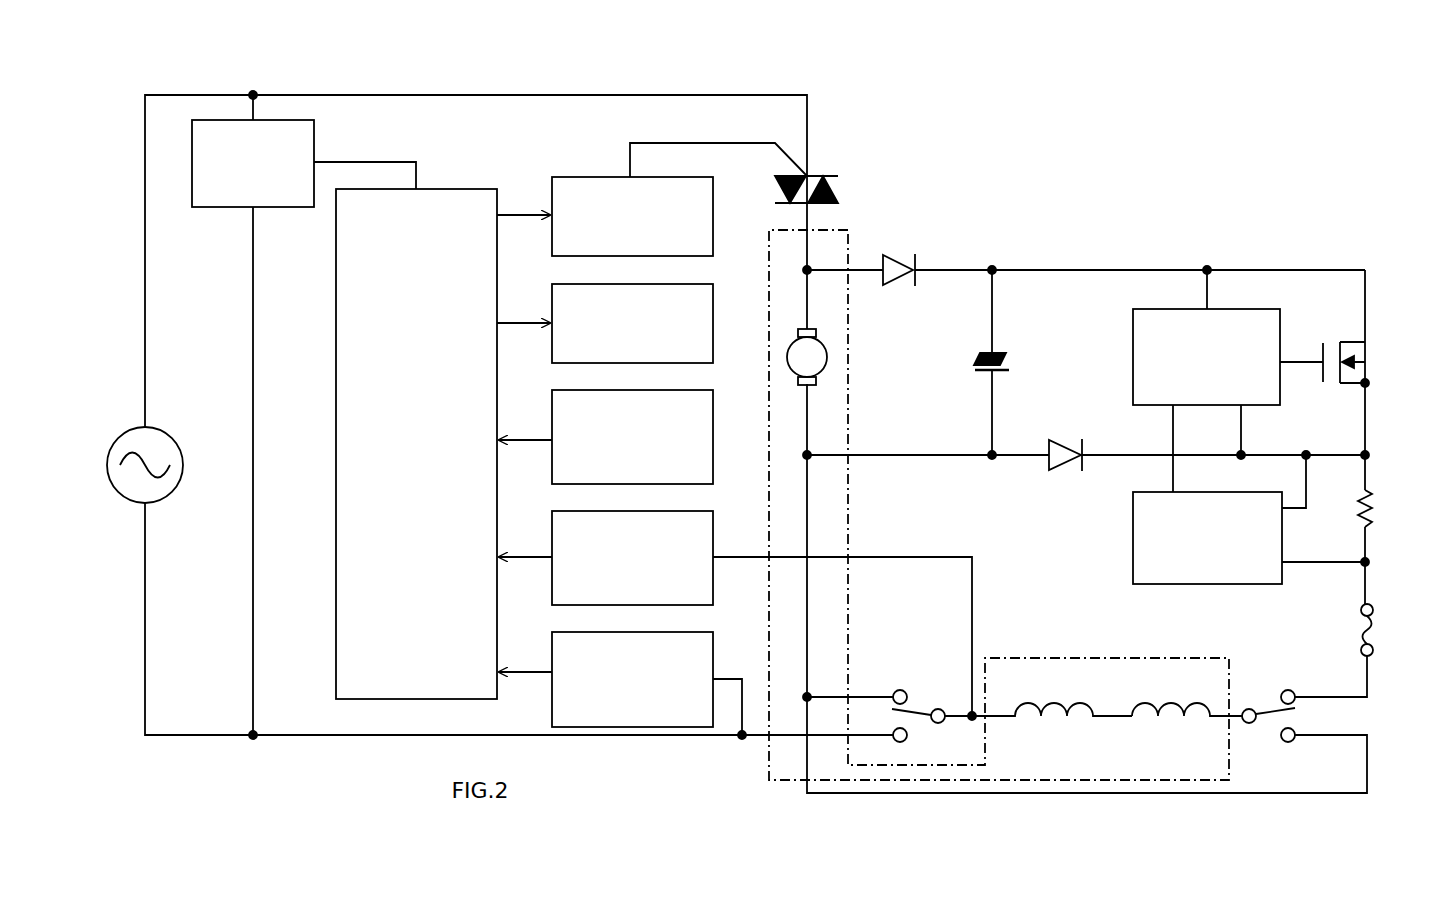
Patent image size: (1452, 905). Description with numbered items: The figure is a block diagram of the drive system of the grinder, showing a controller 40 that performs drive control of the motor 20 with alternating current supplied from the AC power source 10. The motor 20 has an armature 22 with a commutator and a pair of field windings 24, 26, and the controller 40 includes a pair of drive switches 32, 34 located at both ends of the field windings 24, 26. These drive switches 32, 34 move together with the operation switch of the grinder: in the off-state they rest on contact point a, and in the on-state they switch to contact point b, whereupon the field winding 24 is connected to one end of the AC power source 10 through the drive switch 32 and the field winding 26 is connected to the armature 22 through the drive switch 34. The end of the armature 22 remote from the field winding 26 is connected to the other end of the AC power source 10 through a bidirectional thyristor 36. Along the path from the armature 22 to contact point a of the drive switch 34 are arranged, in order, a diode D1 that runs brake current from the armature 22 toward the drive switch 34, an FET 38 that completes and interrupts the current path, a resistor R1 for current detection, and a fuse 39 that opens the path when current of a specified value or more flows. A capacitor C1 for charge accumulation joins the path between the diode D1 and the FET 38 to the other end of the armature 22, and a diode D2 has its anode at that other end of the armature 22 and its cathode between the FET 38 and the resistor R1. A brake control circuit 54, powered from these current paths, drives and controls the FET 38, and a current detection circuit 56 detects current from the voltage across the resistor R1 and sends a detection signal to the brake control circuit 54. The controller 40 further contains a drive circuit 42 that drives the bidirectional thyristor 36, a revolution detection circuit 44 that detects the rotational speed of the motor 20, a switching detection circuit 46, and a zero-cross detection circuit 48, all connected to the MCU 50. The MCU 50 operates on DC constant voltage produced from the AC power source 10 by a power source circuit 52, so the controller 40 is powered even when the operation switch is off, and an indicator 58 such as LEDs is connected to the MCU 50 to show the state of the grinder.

The AC power source 10 is at (168, 431).
The motor 20 is at (850, 228).
The armature 22 is at (827, 352).
The field winding 24 is at (1045, 701).
The field winding 26 is at (1167, 701).
The drive switch 32 is at (919, 700).
The drive switch 34 is at (1270, 700).
The bidirectional thyristor 36 is at (820, 171).
The FET 38 is at (1370, 355).
The fuse 39 is at (1373, 633).
The controller 40 is at (1064, 98).
The drive circuit 42 is at (688, 177).
The revolution detection circuit 44 is at (688, 390).
The switching detection circuit 46 is at (688, 511).
The zero-cross detection circuit 48 is at (688, 632).
The MCU 50 is at (455, 189).
The power source circuit 52 is at (314, 136).
The brake control circuit 54 is at (1240, 310).
The current detection circuit 56 is at (1240, 493).
The indicator 58 is at (688, 284).
The diode D1 is at (1086, 258).
The diode D2 is at (1086, 443).
The capacitor C1 is at (982, 362).
The resistor R1 is at (1387, 508).